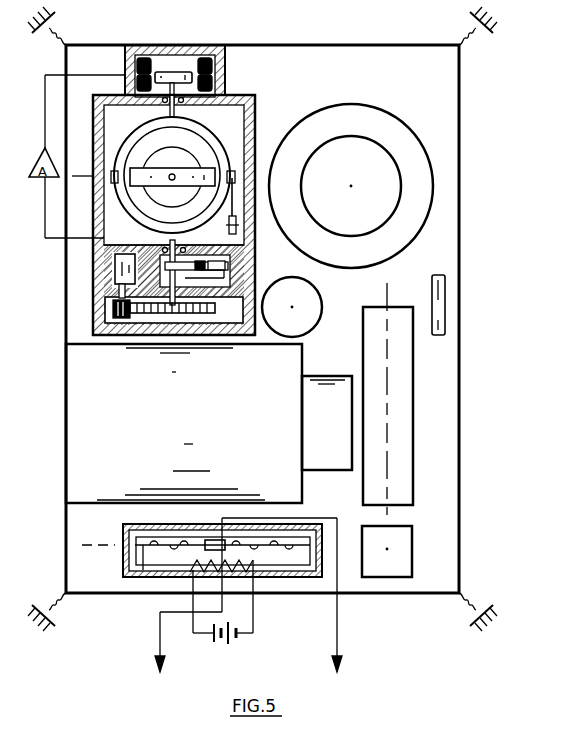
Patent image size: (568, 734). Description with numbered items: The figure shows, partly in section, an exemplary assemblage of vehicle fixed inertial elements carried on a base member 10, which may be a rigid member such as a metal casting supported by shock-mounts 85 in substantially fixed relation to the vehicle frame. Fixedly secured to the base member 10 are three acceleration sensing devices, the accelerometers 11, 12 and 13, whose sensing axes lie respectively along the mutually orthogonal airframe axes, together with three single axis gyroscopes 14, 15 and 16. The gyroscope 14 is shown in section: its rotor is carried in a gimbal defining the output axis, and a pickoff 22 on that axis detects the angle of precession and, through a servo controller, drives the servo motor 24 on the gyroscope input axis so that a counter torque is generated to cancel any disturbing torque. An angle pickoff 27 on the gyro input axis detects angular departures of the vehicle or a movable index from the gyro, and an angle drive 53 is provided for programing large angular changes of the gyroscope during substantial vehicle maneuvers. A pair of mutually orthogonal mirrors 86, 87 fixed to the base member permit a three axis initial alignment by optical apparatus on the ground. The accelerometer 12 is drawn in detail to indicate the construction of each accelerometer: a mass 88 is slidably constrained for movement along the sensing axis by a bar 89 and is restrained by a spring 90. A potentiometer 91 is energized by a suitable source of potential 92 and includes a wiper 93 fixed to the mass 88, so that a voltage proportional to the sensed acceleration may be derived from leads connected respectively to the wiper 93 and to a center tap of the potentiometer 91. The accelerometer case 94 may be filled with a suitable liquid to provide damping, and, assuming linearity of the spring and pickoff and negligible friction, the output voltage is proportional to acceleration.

The base member 10 is at (461, 88).
The shock-mounts 85 is at (462, 38).
The servo motor 24 is at (152, 43).
The single axis gyroscope 14 is at (232, 91).
The single axis gyroscope 16 is at (358, 223).
The pickoff 22 is at (246, 232).
The angle pickoff 27 is at (253, 266).
The angle drive 53 is at (104, 267).
The mirror 86 is at (310, 292).
The mirror 87 is at (432, 296).
The acceleration sensing device 11 is at (400, 421).
The single axis gyroscope 15 is at (222, 423).
The acceleration sensing device 13 is at (412, 545).
The acceleration sensing device 12 is at (240, 537).
The accelerometer case 94 is at (318, 553).
The mass 88 is at (190, 540).
The wiper 93 is at (215, 540).
The bar 89 is at (164, 589).
The potentiometer 91 is at (217, 595).
The spring 90 is at (282, 595).
The source of potential 92 is at (238, 643).